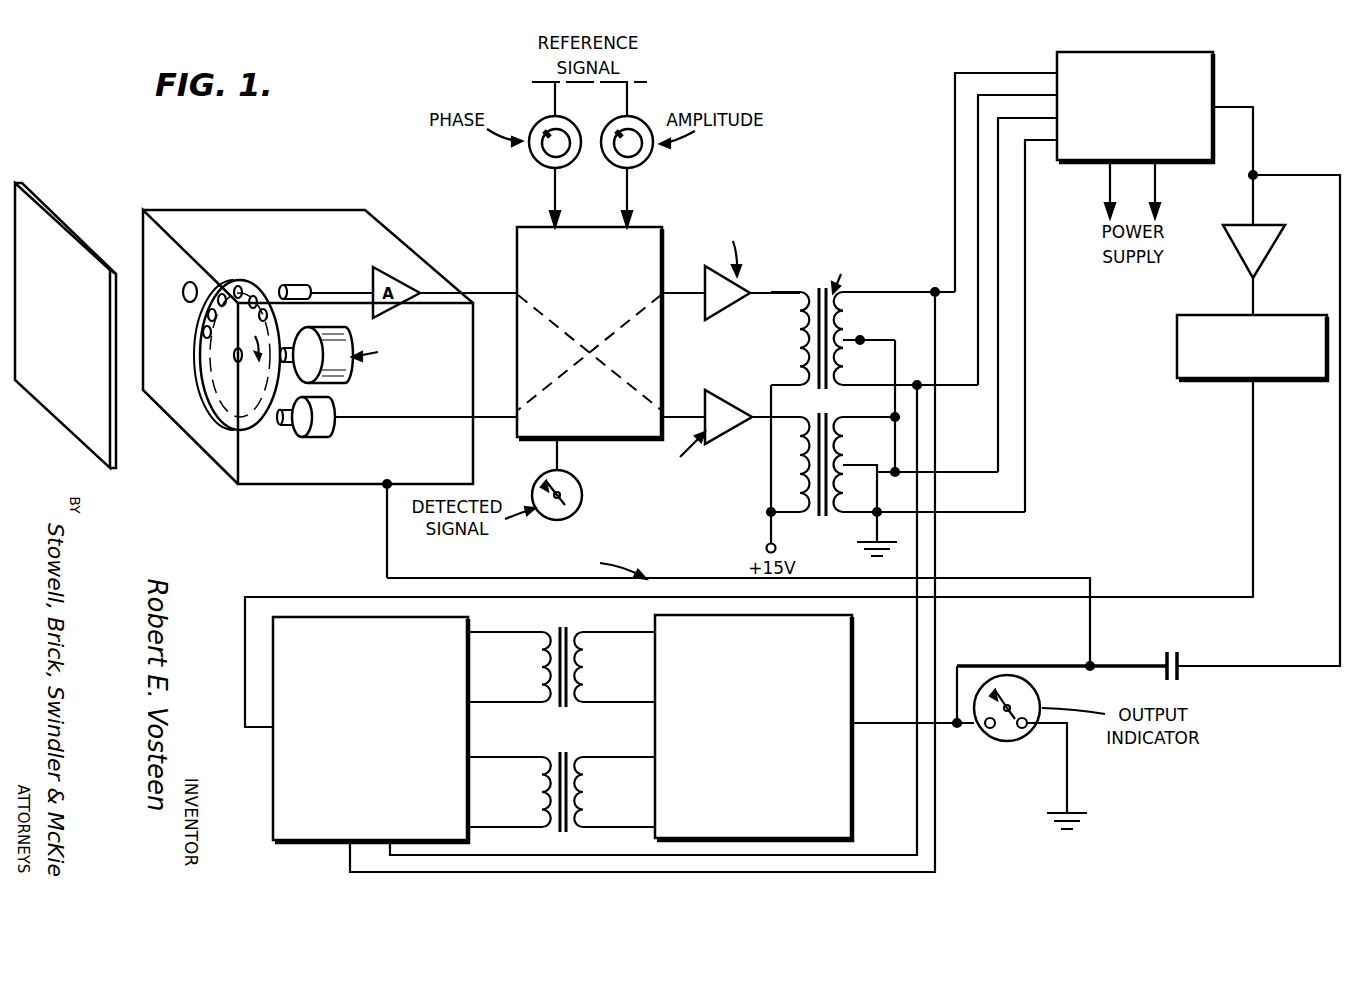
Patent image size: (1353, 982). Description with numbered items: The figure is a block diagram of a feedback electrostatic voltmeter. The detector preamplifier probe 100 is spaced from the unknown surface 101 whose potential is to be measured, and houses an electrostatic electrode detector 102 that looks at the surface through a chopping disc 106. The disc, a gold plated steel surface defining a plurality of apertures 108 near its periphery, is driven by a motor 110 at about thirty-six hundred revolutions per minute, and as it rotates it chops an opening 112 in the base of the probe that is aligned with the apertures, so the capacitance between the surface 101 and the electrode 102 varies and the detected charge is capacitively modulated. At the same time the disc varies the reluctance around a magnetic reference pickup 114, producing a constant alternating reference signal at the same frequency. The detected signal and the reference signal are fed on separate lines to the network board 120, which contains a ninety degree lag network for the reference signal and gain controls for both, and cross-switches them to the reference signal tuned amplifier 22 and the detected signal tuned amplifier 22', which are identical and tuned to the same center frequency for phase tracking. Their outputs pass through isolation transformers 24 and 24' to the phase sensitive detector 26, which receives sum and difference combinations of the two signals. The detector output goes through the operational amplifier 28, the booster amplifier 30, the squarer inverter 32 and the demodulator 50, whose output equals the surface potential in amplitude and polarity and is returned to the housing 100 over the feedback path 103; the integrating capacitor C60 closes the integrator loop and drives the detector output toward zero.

The unknown surface 101 is at (60, 226).
The detector preamplifier probe 100 is at (257, 210).
The opening 112 is at (195, 283).
The apertures 108 is at (246, 283).
The chopping disc 106 is at (207, 400).
The electrostatic electrode detector 102 is at (300, 287).
The motor 110 is at (358, 345).
The magnetic reference pickup 114 is at (315, 440).
The network board 120 is at (524, 228).
The reference signal tuned amplifier 22 is at (731, 263).
The detected signal tuned amplifier 22' is at (716, 443).
The isolation transformer 24 is at (874, 308).
The isolation transformer 24' is at (876, 484).
The feedback path 103 is at (710, 578).
The phase sensitive detector 26 is at (1218, 78).
The operational amplifier 28 is at (1235, 250).
The booster amplifier 30 is at (1210, 382).
The squarer inverter 32 is at (297, 781).
The demodulator 50 is at (833, 648).
The integrating capacitor C60 is at (1180, 662).